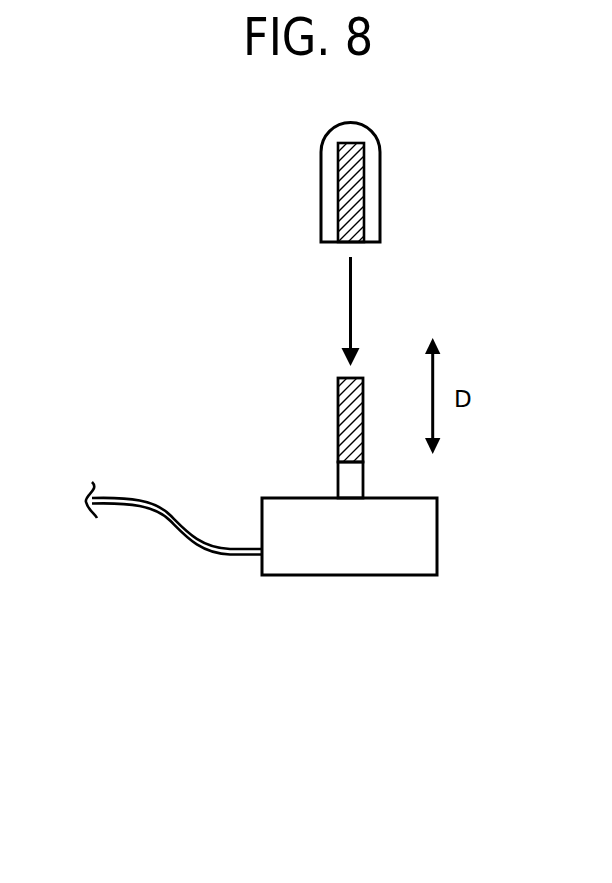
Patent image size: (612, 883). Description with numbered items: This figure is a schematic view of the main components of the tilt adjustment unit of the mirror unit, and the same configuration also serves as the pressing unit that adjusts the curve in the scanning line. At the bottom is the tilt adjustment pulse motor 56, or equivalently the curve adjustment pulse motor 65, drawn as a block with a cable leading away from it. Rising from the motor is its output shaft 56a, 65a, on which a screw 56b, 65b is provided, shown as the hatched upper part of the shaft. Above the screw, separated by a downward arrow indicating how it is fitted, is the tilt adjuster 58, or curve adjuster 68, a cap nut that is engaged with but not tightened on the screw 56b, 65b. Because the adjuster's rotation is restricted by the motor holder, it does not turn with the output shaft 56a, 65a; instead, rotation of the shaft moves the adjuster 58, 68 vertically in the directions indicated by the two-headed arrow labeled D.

The tilt adjuster 58 is at (393, 197).
The curve adjuster 68 is at (380, 195).
The tilt adjustment pulse motor 56 is at (305, 528).
The curve adjustment pulse motor 65 is at (438, 538).
The output shaft 56a is at (295, 479).
The output shaft 65a is at (336, 475).
The screw 56b is at (301, 427).
The screw 65b is at (336, 405).